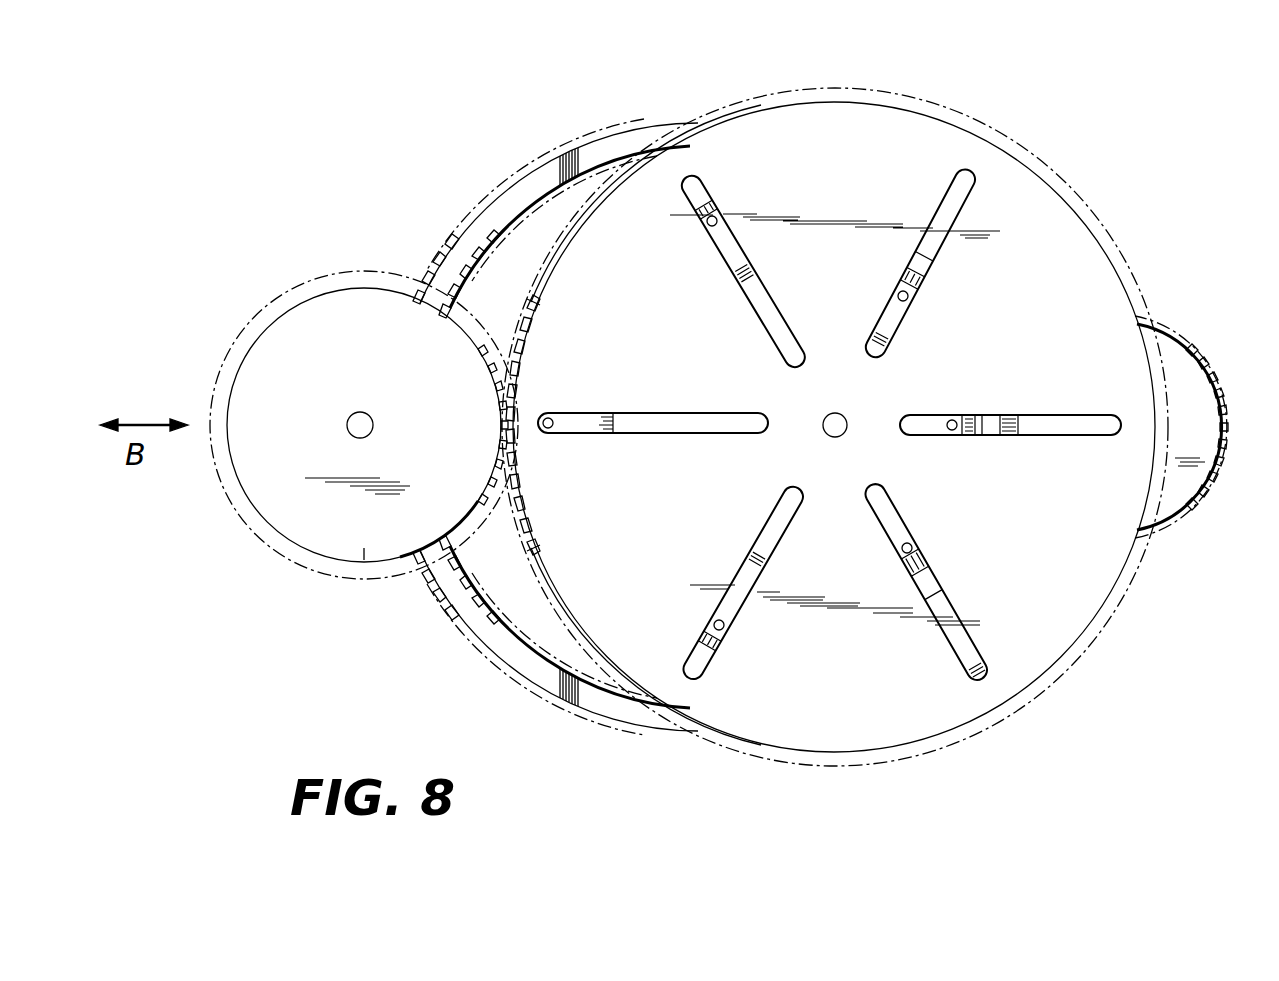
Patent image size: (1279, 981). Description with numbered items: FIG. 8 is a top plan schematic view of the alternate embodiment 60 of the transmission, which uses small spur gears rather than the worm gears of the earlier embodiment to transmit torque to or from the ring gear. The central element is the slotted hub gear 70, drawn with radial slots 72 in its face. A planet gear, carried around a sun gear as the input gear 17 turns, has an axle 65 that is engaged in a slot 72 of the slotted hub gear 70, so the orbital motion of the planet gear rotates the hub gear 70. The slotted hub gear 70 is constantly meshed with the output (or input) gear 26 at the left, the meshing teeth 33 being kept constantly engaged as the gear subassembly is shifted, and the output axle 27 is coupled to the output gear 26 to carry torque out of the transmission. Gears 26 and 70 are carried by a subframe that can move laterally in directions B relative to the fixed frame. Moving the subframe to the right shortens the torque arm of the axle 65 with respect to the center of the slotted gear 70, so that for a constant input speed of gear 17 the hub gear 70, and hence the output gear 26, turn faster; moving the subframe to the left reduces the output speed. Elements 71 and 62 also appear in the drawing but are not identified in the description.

The alternate embodiment 60 is at (1097, 118).
The slotted hub gear 70 is at (1035, 157).
The turntable platform 71 is at (1062, 252).
The slot 72 is at (757, 303).
The axle 65 is at (897, 293).
The input gear 17 is at (1183, 487).
The drive band 62 is at (515, 203).
The teeth 33 is at (490, 366).
The output gear 26 is at (320, 530).
The output axle 27 is at (351, 424).